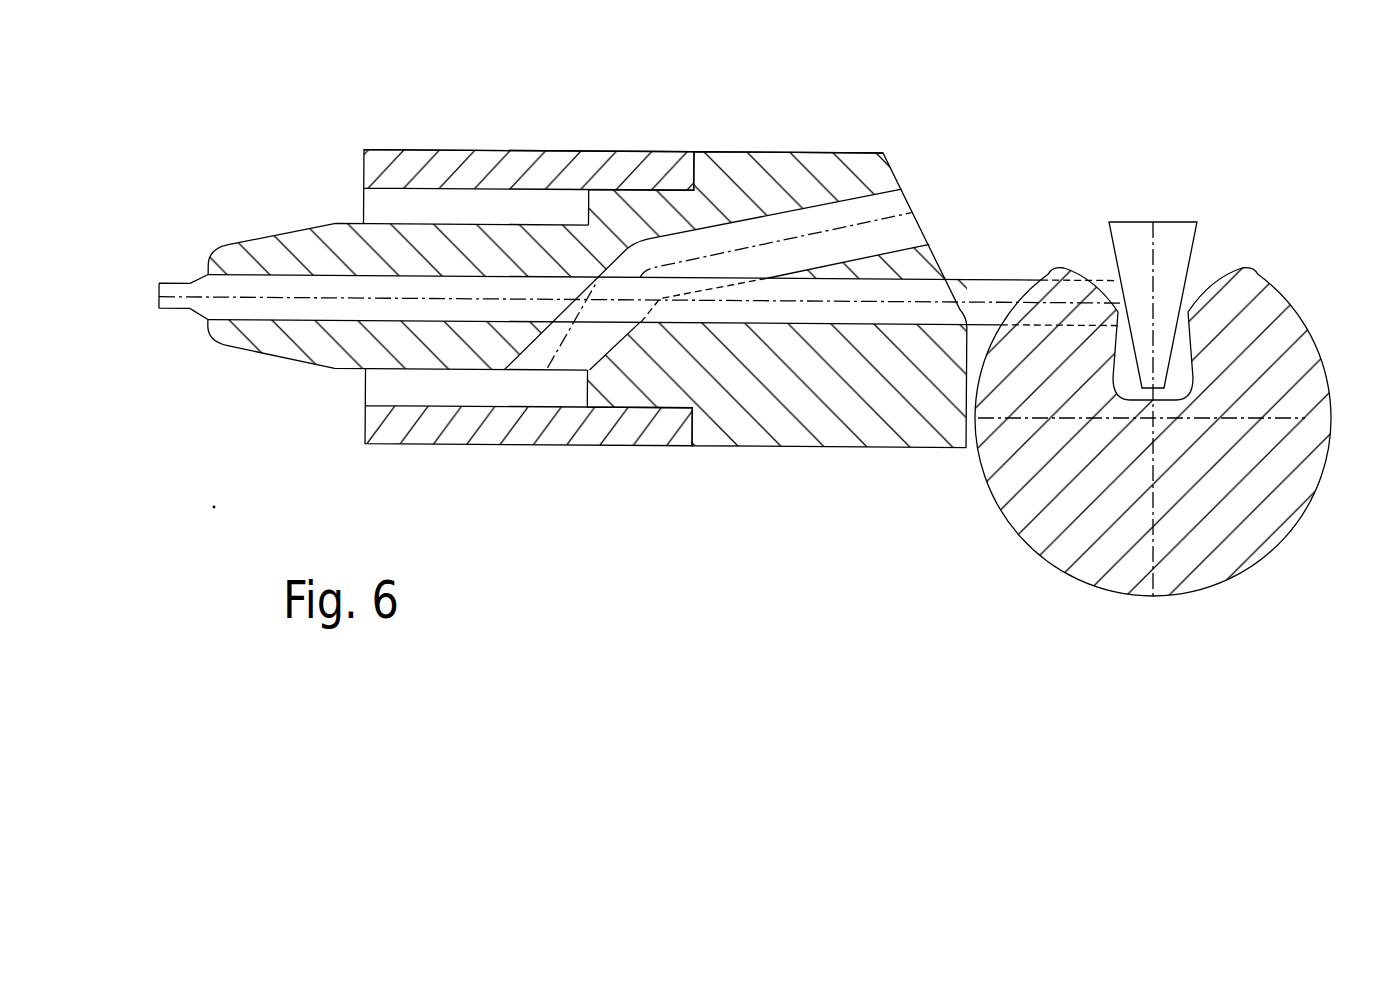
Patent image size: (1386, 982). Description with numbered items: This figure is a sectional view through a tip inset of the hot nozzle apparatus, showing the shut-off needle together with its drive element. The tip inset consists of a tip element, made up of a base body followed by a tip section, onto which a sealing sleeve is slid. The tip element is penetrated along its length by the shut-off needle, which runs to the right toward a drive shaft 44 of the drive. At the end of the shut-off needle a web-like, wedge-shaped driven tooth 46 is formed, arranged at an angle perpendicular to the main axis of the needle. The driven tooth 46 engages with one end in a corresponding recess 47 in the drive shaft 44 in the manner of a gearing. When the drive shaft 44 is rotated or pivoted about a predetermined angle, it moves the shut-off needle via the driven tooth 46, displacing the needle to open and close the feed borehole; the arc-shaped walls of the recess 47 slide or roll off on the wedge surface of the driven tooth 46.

The driven tooth 46 is at (1195, 253).
The recess 47 is at (1184, 317).
The drive shaft 44 is at (1307, 395).